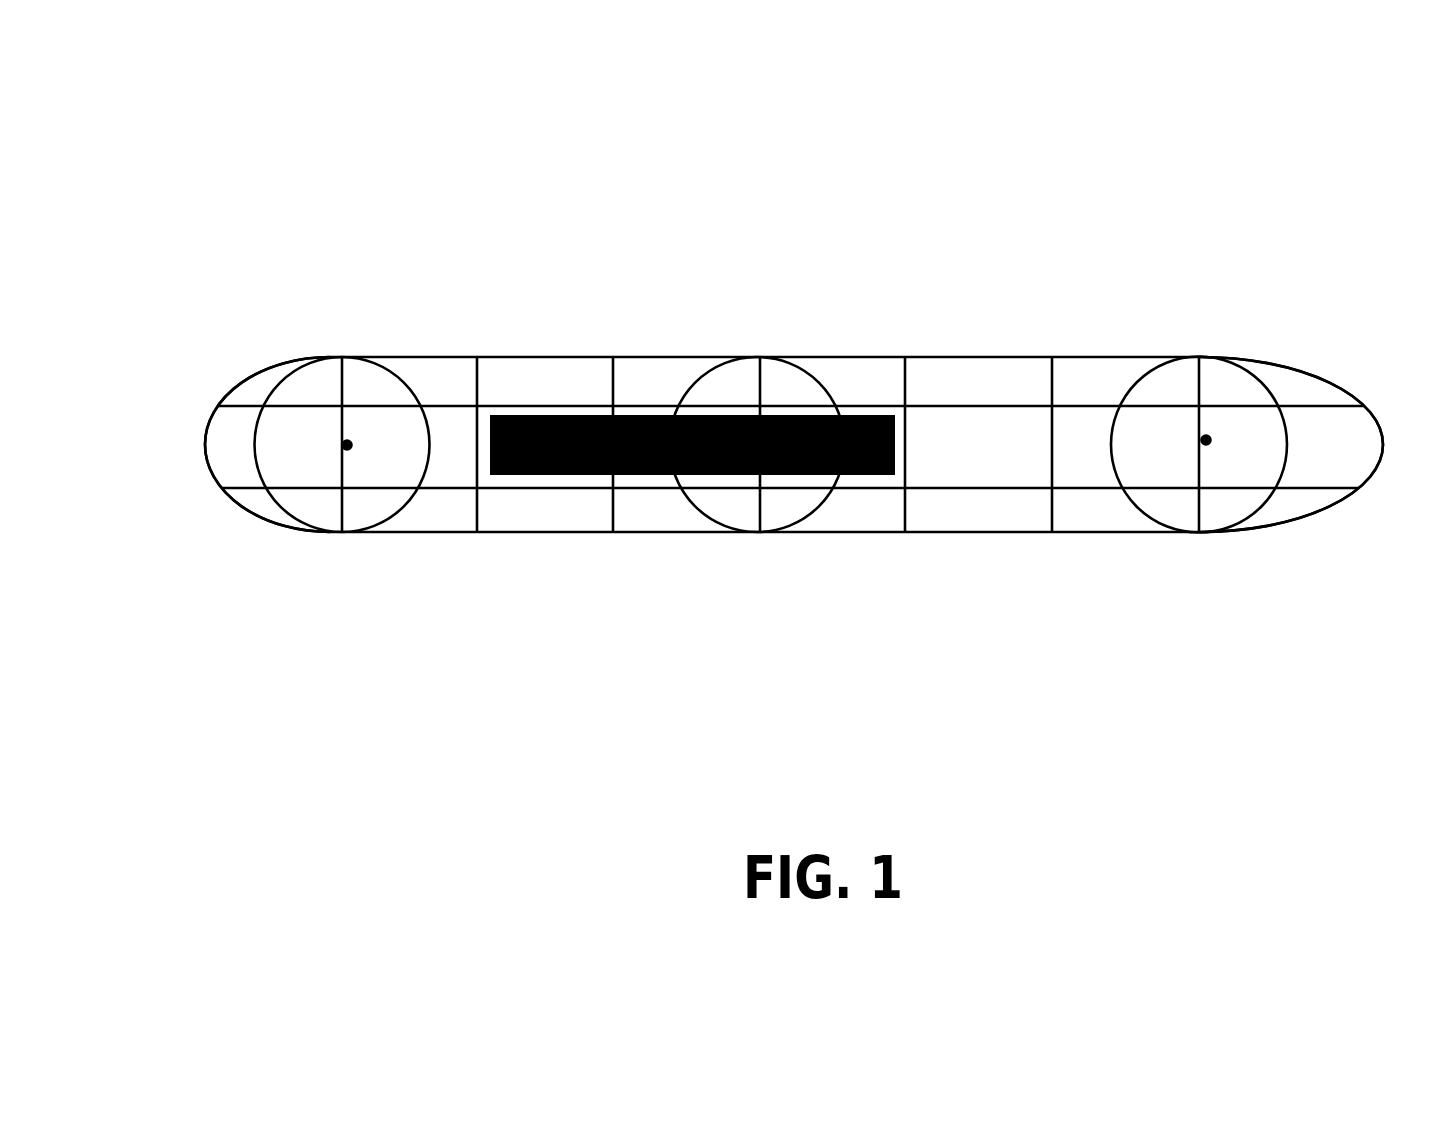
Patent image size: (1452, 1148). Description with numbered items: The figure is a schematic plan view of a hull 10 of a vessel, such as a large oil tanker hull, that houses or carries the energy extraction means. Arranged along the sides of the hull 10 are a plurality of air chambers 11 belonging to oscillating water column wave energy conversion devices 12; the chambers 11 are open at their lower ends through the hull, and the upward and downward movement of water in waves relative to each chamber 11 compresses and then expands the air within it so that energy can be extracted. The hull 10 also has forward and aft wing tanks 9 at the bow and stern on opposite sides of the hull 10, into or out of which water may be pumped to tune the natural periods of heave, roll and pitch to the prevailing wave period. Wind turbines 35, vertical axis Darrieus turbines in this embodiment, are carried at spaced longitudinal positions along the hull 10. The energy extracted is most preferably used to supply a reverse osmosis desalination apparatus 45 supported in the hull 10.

The hull 10 is at (398, 284).
The forward and aft wing tanks 9 is at (299, 366).
The air chambers 11 is at (1084, 351).
The oscillating water column wave energy conversion devices 12 is at (732, 540).
The wind turbines 35 is at (1186, 338).
The desalination apparatus 45 is at (594, 475).